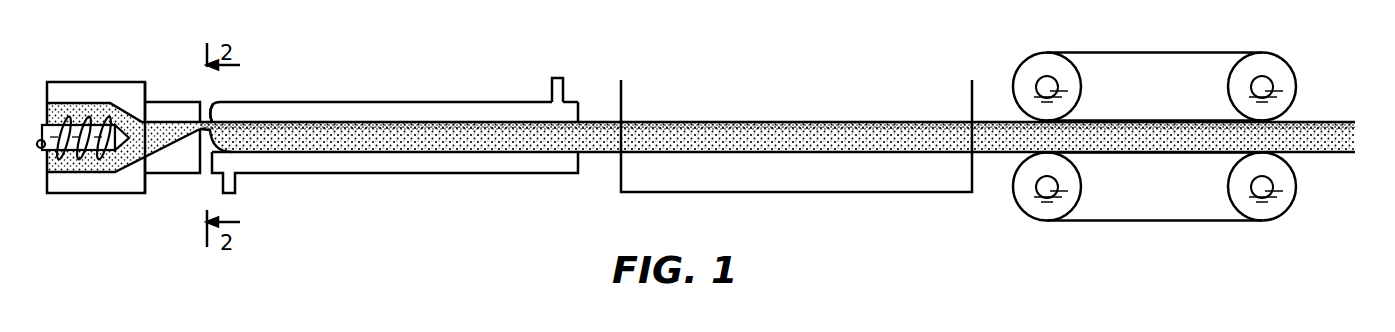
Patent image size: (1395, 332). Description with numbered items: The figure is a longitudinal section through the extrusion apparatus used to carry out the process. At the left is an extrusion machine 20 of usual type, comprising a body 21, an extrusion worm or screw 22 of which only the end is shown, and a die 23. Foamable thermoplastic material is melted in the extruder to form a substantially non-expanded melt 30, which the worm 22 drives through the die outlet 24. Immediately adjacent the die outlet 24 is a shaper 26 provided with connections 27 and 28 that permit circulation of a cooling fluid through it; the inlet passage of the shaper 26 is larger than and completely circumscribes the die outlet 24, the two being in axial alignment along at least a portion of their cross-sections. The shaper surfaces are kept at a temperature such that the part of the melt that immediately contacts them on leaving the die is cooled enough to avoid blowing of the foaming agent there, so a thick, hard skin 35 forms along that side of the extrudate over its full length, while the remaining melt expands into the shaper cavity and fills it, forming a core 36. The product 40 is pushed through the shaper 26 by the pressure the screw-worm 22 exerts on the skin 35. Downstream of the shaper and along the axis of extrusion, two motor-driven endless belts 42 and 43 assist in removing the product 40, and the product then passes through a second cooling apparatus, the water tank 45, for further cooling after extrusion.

The extrusion machine 20 is at (65, 202).
The body 21 is at (73, 90).
The extrusion worm or screw 22 is at (94, 126).
The die 23 is at (161, 166).
The die outlet 24 is at (214, 100).
The shaper 26 is at (439, 105).
The connection 27 is at (239, 188).
The connection 28 is at (552, 82).
The melt 30 is at (152, 137).
The skin 35 is at (358, 122).
The core 36 is at (445, 145).
The product 40 is at (599, 164).
The endless belt 42 is at (1133, 52).
The endless belt 43 is at (1125, 223).
The water tank 45 is at (904, 192).